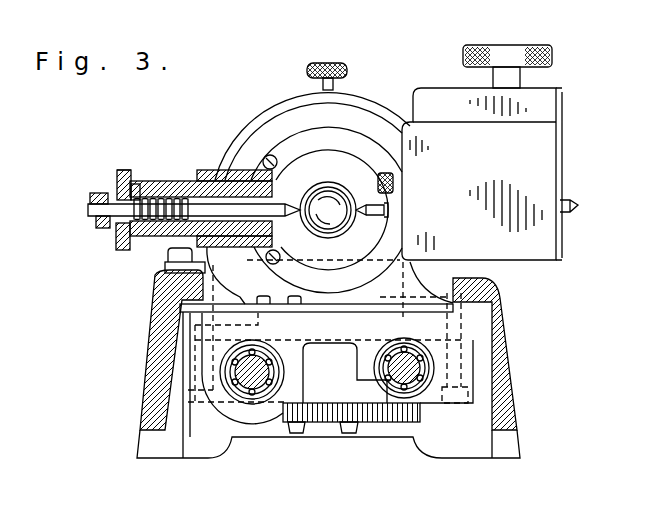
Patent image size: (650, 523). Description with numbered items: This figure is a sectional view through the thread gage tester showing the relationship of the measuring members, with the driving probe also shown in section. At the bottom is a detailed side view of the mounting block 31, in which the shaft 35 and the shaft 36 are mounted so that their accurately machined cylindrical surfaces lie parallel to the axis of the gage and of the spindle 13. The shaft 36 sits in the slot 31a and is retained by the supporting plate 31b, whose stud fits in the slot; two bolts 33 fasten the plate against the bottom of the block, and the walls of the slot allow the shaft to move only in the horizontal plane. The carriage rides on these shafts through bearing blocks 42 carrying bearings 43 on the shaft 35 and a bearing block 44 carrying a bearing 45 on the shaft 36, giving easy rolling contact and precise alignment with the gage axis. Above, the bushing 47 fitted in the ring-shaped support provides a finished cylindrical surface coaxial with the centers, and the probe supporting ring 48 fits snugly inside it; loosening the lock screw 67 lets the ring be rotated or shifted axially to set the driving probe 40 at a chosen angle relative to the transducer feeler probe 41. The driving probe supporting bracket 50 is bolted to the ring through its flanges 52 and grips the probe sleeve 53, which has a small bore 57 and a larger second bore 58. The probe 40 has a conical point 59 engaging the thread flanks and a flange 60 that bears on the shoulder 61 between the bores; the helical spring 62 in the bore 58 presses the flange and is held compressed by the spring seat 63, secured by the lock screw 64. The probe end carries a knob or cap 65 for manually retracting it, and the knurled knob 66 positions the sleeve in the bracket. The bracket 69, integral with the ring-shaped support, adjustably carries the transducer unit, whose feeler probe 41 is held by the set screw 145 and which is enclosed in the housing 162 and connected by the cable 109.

The spindle 13 is at (338, 188).
The mounting block 31 is at (373, 397).
The slot 31a is at (418, 390).
The supporting plate 31b is at (327, 413).
The bolts 33 is at (302, 430).
The shaft 35 is at (254, 390).
The shaft 36 is at (408, 385).
The driving probe 40 is at (267, 207).
The transducer feeler probe 41 is at (372, 218).
The bearing blocks 42 is at (235, 413).
The bearings 43 is at (220, 397).
The bearing block 44 is at (447, 370).
The bearing 45 is at (427, 363).
The bushing 47 is at (287, 128).
The probe supporting ring 48 is at (343, 135).
The driving probe supporting bracket 50 is at (220, 180).
The flanges 52 is at (265, 157).
The probe sleeve 53 is at (160, 282).
The small bore 57 is at (198, 171).
The second bore 58 is at (150, 181).
The conical point 59 is at (289, 226).
The flange 60 is at (165, 248).
The shoulder 61 is at (170, 263).
The helical spring 62 is at (138, 172).
The spring seat 63 is at (113, 228).
The lock screw 64 is at (124, 250).
The knob or cap 65 is at (93, 194).
The knurled knob 66 is at (113, 175).
The lock screw 67 is at (338, 62).
The bracket 69 is at (394, 128).
The cable 109 is at (573, 198).
The set screw 145 is at (400, 187).
The housing 162 is at (548, 112).